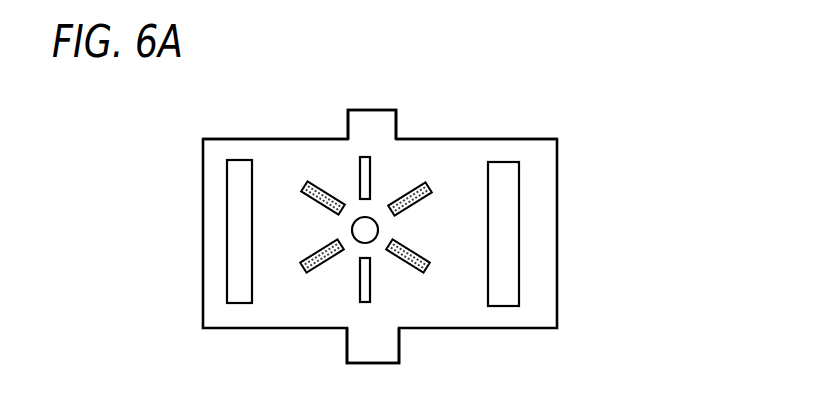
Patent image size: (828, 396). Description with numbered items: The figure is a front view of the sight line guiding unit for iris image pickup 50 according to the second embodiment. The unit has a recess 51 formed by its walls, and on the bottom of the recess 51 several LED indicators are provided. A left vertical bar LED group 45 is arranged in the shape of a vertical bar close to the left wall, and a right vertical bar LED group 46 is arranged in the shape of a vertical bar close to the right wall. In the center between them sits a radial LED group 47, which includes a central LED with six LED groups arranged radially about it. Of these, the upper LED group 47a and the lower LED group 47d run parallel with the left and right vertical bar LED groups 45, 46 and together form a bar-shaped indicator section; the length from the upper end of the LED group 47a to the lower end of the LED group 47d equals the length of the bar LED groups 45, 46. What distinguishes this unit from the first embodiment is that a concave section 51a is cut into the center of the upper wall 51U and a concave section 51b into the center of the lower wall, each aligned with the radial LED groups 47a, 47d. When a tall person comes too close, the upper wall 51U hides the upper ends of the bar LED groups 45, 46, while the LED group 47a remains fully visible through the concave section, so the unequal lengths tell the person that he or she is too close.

The sight line guiding unit for iris image pickup 50 is at (561, 130).
The recess 51 is at (467, 148).
The upper wall 51U is at (271, 139).
The concave section 51a is at (378, 122).
The concave section 51b is at (399, 349).
The left vertical bar LED group 45 is at (229, 267).
The right vertical bar LED group 46 is at (508, 249).
The radial LED group 47 is at (342, 263).
The LED group 47a is at (371, 170).
The LED group 47d is at (371, 278).